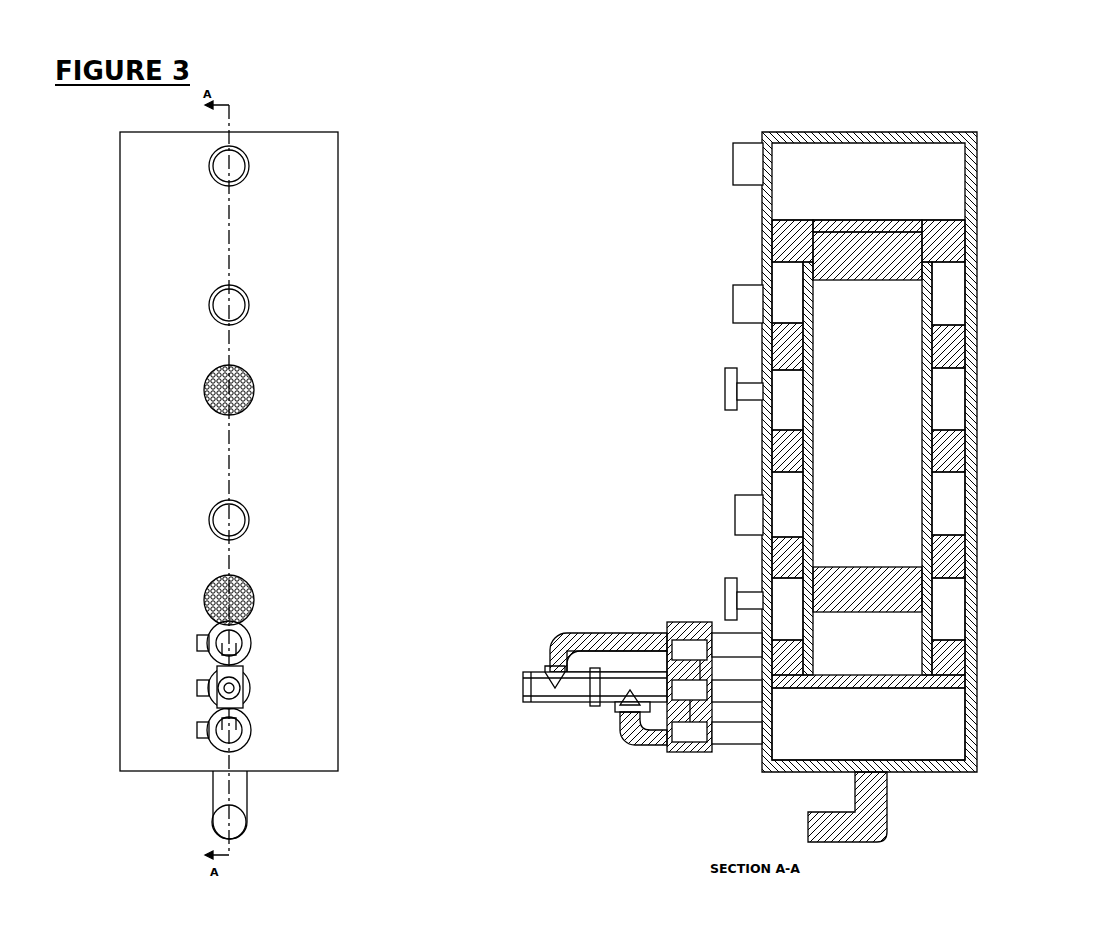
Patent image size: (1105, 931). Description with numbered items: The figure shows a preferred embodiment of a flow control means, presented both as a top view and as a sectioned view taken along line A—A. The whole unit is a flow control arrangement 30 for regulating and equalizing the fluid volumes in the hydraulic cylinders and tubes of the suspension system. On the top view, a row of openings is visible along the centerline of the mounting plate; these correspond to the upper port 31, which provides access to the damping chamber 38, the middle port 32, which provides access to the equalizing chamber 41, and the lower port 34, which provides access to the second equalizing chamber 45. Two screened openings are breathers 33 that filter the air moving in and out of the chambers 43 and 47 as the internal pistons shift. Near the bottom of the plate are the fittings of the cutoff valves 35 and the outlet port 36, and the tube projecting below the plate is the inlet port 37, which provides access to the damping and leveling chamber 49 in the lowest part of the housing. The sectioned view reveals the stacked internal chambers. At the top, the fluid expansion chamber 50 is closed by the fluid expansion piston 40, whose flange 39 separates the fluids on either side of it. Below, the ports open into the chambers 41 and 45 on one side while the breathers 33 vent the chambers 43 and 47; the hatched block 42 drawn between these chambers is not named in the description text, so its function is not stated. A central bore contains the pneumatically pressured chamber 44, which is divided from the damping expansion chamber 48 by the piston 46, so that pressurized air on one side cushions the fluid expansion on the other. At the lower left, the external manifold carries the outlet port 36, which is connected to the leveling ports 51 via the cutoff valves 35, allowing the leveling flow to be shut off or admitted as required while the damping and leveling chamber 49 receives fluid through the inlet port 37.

The flow control arrangement 30 is at (833, 133).
The upper port 31 is at (235, 166).
The middle port 32 is at (240, 305).
The breathers 33 is at (255, 390).
The lower port 34 is at (240, 520).
The cutoff valves 35 is at (252, 643).
The outlet port 36 is at (252, 688).
The inlet port 37 is at (857, 795).
The damping chamber 38 is at (907, 175).
The flange 39 is at (948, 240).
The fluid expansion piston 40 is at (917, 268).
The equalizing chamber 41 is at (790, 297).
The spacer block 42 is at (955, 358).
The chamber 43 is at (788, 400).
The pneumatically pressured chamber 44 is at (853, 428).
The equalizing chamber 45 is at (790, 505).
The piston 46 is at (890, 587).
The chamber 47 is at (790, 603).
The damping expansion chamber 48 is at (727, 593).
The damping and leveling chamber 49 is at (887, 728).
The fluid expansion chamber 50 is at (895, 222).
The leveling ports 51 is at (757, 647).